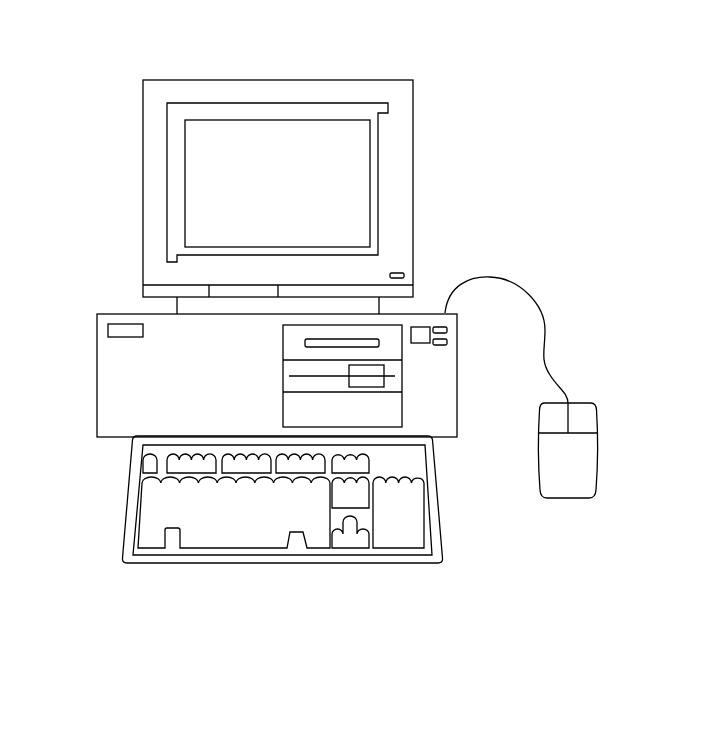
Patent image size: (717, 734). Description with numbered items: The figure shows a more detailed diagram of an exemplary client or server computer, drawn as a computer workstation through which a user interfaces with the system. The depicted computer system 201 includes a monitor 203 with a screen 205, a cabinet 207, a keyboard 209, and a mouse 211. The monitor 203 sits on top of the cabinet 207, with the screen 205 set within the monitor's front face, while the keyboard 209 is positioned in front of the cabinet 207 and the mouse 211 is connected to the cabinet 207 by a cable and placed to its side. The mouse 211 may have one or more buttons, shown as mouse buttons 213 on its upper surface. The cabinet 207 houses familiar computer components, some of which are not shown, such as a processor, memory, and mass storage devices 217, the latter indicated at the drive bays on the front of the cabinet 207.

The computer system 201 is at (433, 57).
The monitor 203 is at (413, 163).
The screen 205 is at (200, 173).
The cabinet 207 is at (123, 317).
The keyboard 209 is at (167, 563).
The mouse 211 is at (568, 483).
The mouse buttons 213 is at (560, 423).
The mass storage devices 217 is at (393, 330).